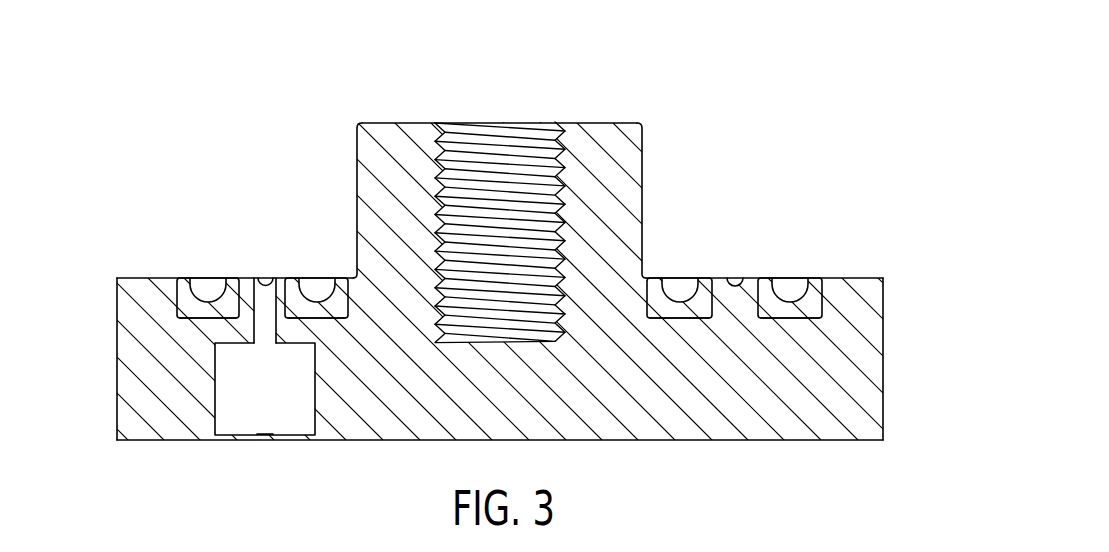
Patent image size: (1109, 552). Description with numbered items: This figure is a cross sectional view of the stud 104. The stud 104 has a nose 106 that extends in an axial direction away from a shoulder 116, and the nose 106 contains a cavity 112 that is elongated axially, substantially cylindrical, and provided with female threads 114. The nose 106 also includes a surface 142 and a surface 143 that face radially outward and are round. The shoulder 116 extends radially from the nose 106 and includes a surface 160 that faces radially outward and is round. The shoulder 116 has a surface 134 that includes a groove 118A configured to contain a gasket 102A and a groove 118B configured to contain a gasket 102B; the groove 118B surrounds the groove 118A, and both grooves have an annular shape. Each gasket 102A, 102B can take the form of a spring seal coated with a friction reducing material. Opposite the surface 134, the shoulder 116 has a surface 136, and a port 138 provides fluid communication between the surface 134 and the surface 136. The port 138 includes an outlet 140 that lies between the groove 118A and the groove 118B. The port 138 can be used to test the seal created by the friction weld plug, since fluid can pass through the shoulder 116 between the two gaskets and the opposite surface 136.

The stud 104 is at (265, 102).
The nose 106 is at (613, 140).
The cavity 112 is at (465, 105).
The female threads 114 is at (452, 158).
The shoulder 116 is at (745, 427).
The groove 118A is at (338, 320).
The groove 118B is at (193, 320).
The gasket 102A is at (318, 275).
The gasket 102B is at (210, 275).
The surface 134 is at (150, 275).
The surface 136 is at (125, 443).
The port 138 is at (262, 455).
The outlet 140 is at (267, 275).
The surface 142 is at (357, 172).
The surface 143 is at (642, 163).
The surface 160 is at (117, 355).